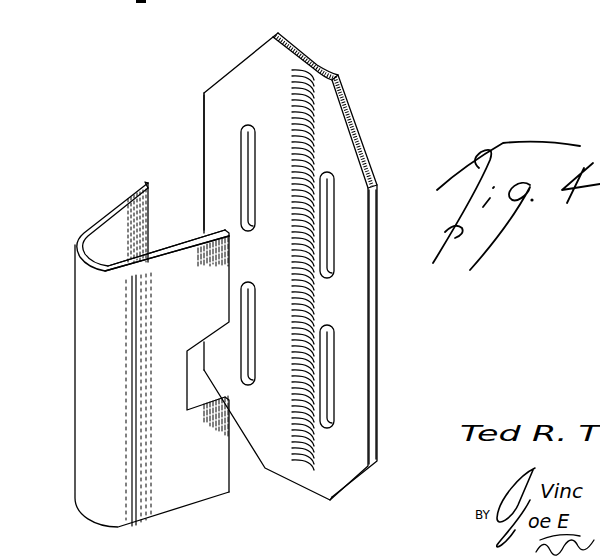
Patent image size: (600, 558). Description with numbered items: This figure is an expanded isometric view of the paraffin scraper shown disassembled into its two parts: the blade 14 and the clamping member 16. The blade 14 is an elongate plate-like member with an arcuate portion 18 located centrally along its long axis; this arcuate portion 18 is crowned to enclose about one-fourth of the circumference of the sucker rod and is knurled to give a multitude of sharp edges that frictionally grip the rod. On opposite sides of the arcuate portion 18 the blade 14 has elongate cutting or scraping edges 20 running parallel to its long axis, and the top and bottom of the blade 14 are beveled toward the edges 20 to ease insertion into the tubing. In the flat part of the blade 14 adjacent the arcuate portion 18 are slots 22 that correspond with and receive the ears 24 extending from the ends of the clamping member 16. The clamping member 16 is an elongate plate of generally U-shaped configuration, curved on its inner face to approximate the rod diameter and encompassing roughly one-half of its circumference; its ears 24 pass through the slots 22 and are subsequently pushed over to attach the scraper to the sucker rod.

The blade 14 is at (368, 300).
The clamping member 16 is at (69, 376).
The arcuate portion 18 is at (298, 116).
The cutting or scraping edges 20 is at (204, 113).
The slots 22 is at (333, 222).
The ears 24 is at (210, 233).